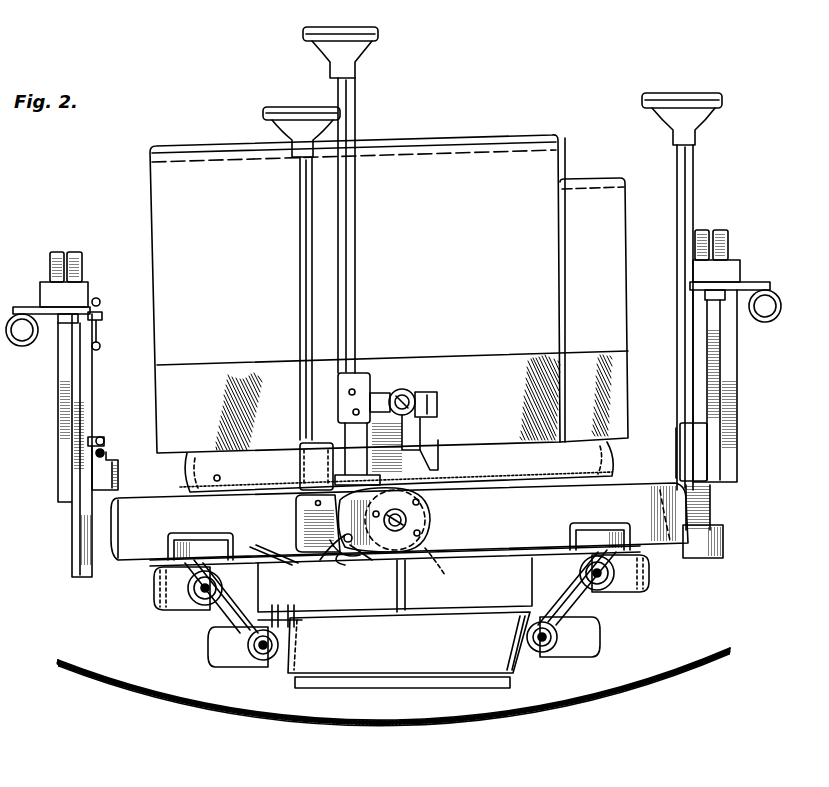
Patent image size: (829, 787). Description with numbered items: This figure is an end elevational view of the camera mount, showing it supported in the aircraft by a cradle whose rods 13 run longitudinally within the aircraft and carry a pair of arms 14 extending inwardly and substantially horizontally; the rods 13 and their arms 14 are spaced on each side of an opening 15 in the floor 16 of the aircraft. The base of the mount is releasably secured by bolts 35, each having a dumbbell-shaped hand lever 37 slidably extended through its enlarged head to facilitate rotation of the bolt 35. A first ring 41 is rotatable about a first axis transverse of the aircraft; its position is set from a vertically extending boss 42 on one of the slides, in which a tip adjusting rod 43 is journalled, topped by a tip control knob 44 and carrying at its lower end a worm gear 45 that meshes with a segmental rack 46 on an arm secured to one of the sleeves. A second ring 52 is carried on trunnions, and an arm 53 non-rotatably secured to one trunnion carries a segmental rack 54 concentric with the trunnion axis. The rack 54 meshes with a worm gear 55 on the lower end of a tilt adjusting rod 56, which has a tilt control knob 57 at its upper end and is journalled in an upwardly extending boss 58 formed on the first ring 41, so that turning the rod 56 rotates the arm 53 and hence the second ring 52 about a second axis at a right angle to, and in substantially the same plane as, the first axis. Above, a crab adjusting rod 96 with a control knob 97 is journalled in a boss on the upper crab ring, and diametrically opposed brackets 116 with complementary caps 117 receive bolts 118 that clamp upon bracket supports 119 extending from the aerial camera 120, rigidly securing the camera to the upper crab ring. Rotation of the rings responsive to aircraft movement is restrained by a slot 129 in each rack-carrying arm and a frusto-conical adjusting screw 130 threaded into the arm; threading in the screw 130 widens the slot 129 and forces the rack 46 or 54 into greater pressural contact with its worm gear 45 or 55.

The rod 13 is at (14, 346).
The arm 14 is at (750, 285).
The opening 15 is at (248, 718).
The floor 16 is at (172, 710).
The bolt 35 is at (103, 316).
The hand lever 37 is at (99, 300).
The first ring 41 is at (148, 560).
The boss 42 is at (684, 425).
The tip adjusting rod 43 is at (695, 185).
The tip control knob 44 is at (720, 100).
The worm gear 45 is at (718, 531).
The segmental rack 46 is at (710, 500).
The second ring 52 is at (448, 612).
The arm 53 is at (352, 560).
The segmental rack 54 is at (318, 566).
The worm gear 55 is at (303, 527).
The tilt adjusting rod 56 is at (300, 255).
The tilt control knob 57 is at (292, 110).
The boss 58 is at (303, 445).
The crab adjusting rod 96 is at (354, 124).
The control knob 97 is at (336, 30).
The bracket 116 is at (438, 411).
The cap 117 is at (413, 392).
The bolt 118 is at (438, 400).
The bracket support 119 is at (406, 393).
The aerial camera 120 is at (560, 145).
The slot 129 is at (358, 550).
The adjusting screw 130 is at (351, 560).